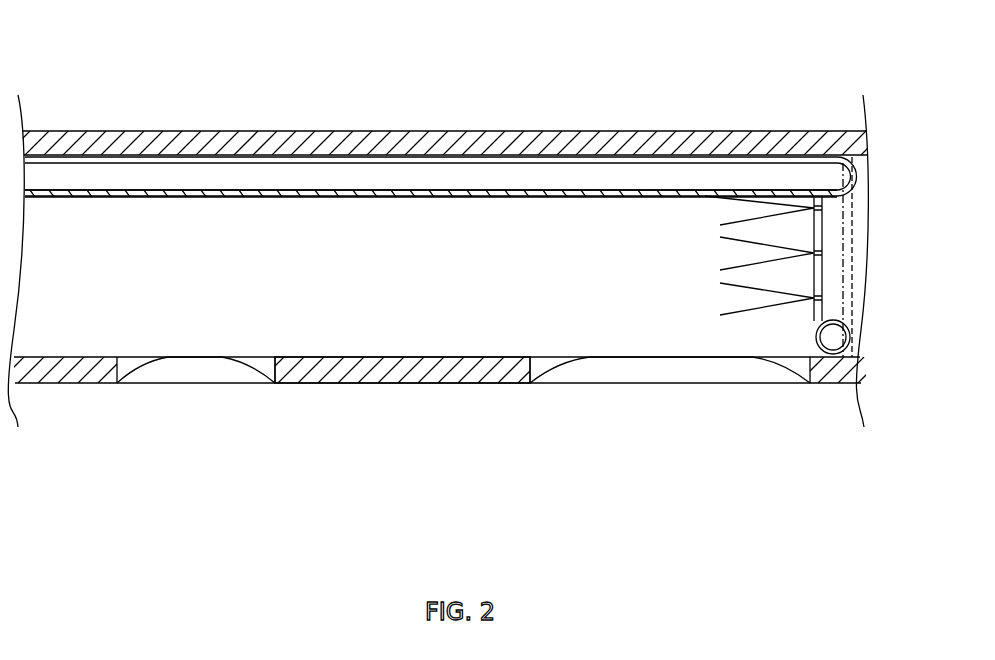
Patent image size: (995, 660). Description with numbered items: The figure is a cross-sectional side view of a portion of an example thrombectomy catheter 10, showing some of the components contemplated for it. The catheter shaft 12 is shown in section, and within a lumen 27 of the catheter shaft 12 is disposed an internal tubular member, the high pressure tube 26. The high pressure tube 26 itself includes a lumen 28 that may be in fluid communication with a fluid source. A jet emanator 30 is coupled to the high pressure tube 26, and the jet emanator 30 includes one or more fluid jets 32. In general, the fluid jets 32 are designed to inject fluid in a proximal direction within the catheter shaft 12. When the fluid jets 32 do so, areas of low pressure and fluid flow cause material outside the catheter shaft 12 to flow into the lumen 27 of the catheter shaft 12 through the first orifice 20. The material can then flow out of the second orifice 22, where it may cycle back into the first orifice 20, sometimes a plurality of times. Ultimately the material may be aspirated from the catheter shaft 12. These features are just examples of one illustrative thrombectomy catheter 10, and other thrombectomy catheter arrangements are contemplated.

The thrombectomy catheter 10 is at (114, 64).
The catheter shaft 12 is at (325, 130).
The first orifice 20 is at (672, 372).
The second orifice 22 is at (190, 372).
The high pressure tube 26 is at (472, 193).
The lumen 27 is at (408, 338).
The lumen 28 is at (322, 178).
The jet emanator 30 is at (808, 340).
The fluid jets 32 is at (822, 253).